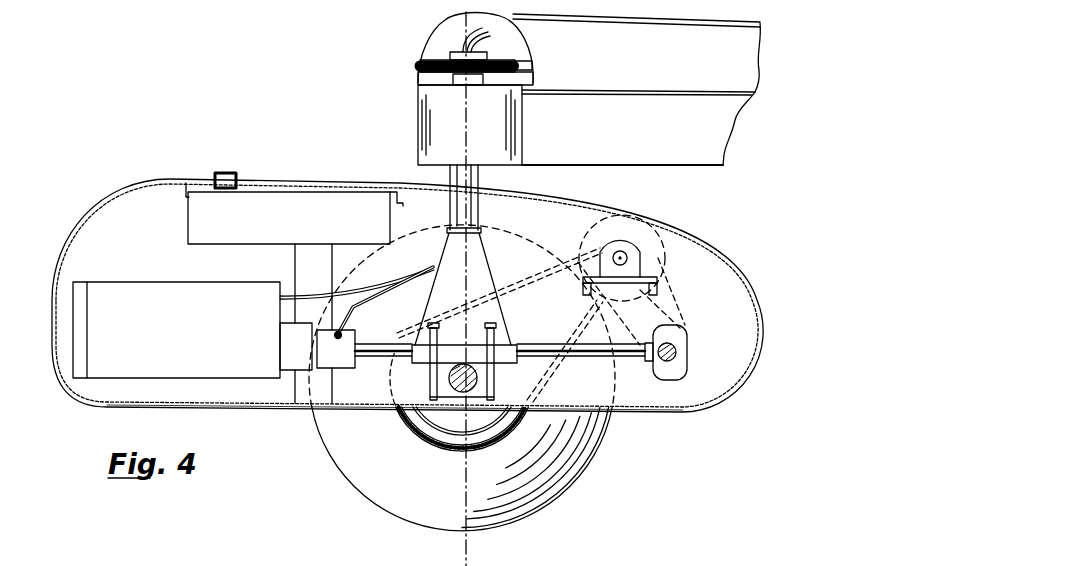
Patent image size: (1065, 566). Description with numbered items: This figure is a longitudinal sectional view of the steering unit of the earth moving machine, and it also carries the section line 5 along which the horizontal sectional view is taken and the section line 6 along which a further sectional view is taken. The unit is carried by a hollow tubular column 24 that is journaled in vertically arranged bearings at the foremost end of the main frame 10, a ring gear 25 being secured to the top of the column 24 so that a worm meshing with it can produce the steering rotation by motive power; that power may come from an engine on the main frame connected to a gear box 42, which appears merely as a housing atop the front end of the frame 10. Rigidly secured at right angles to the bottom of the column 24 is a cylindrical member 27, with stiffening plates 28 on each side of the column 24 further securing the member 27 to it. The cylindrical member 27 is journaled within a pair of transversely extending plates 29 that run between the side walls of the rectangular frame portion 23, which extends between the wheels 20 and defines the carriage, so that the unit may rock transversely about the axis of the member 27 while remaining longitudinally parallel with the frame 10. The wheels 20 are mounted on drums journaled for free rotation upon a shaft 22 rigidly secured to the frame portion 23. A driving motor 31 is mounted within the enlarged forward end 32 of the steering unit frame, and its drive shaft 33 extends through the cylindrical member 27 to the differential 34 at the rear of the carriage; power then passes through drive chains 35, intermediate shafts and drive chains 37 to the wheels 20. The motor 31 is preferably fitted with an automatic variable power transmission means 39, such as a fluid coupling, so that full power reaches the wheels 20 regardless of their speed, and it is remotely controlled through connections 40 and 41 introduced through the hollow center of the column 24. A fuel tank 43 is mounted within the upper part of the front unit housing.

The section line 5— 5 is at (560, 210).
The section line 6— 6 is at (484, 21).
The frame 10 is at (630, 138).
The wheels 20 is at (344, 444).
The shaft 22 is at (456, 408).
The rectangular frame portion 23 is at (366, 388).
The tubular column 24 is at (483, 181).
The ring gear 25 is at (425, 47).
The cylindrical member 27 is at (503, 363).
The stiffening plates 28 is at (500, 297).
The transversely extending plates 29 is at (432, 391).
The driving motor 31 is at (144, 334).
The enlarged forward end 32 is at (101, 194).
The drive shaft 33 is at (578, 358).
The differential 34 is at (688, 366).
The drive chains 35 is at (660, 298).
The drive chains 37 is at (514, 280).
The automatic variable power transmission means 39 is at (345, 368).
The control connection 40 is at (316, 287).
The control connection 41 is at (389, 302).
The gear box 42 is at (614, 66).
The fuel tank 43 is at (259, 226).